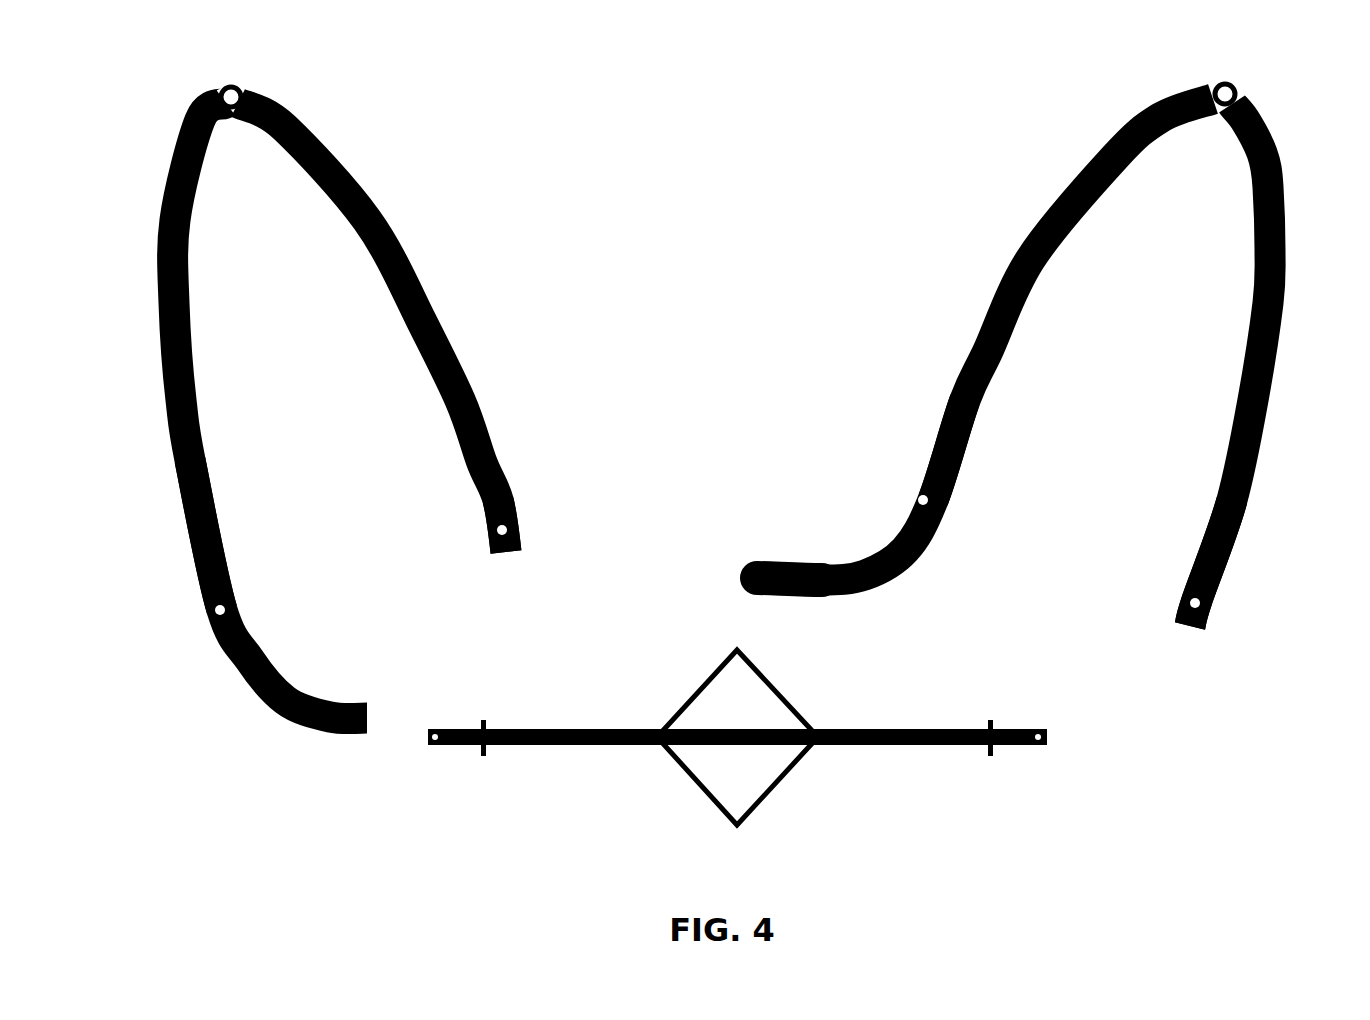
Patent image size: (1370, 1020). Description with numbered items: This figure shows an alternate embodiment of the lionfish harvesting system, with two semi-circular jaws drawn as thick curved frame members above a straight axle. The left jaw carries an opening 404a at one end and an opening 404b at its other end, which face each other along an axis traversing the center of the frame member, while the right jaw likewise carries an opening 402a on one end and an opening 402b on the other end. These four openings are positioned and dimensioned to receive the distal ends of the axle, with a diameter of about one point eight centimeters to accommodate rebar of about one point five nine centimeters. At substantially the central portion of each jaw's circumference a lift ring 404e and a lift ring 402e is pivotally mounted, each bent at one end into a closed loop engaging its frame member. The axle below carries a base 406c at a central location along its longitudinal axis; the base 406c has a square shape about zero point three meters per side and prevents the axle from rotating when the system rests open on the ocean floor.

The lift ring 404e is at (236, 86).
The opening 404a is at (206, 607).
The opening 404b is at (514, 522).
The lift ring 402e is at (1222, 84).
The opening 402a is at (1207, 620).
The opening 402b is at (938, 513).
The base 406c is at (781, 693).